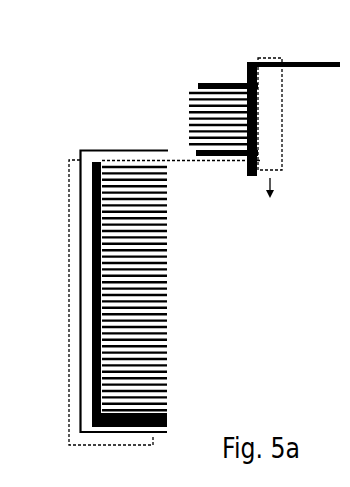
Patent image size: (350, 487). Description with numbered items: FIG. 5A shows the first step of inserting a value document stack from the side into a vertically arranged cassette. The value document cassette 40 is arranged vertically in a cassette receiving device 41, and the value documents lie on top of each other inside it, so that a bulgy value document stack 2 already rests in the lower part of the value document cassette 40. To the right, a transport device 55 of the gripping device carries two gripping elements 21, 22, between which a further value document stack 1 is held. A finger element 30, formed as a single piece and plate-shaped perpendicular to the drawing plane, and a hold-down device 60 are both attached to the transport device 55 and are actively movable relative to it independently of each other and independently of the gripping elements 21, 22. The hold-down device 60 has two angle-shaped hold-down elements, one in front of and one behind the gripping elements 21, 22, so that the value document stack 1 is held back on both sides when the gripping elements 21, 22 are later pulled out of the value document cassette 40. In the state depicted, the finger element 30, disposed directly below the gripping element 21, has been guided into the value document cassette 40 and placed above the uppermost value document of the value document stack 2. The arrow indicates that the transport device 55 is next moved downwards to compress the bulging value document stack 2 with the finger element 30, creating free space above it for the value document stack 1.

The value document stack 1 is at (212, 118).
The value document stack 2 is at (141, 288).
The gripping element 21 is at (195, 152).
The gripping element 22 is at (198, 84).
The finger element 30 is at (230, 163).
The value document cassette 40 is at (79, 273).
The cassette receiving device 41 is at (68, 411).
The transport device 55 is at (284, 114).
The hold-down device 60 is at (292, 62).